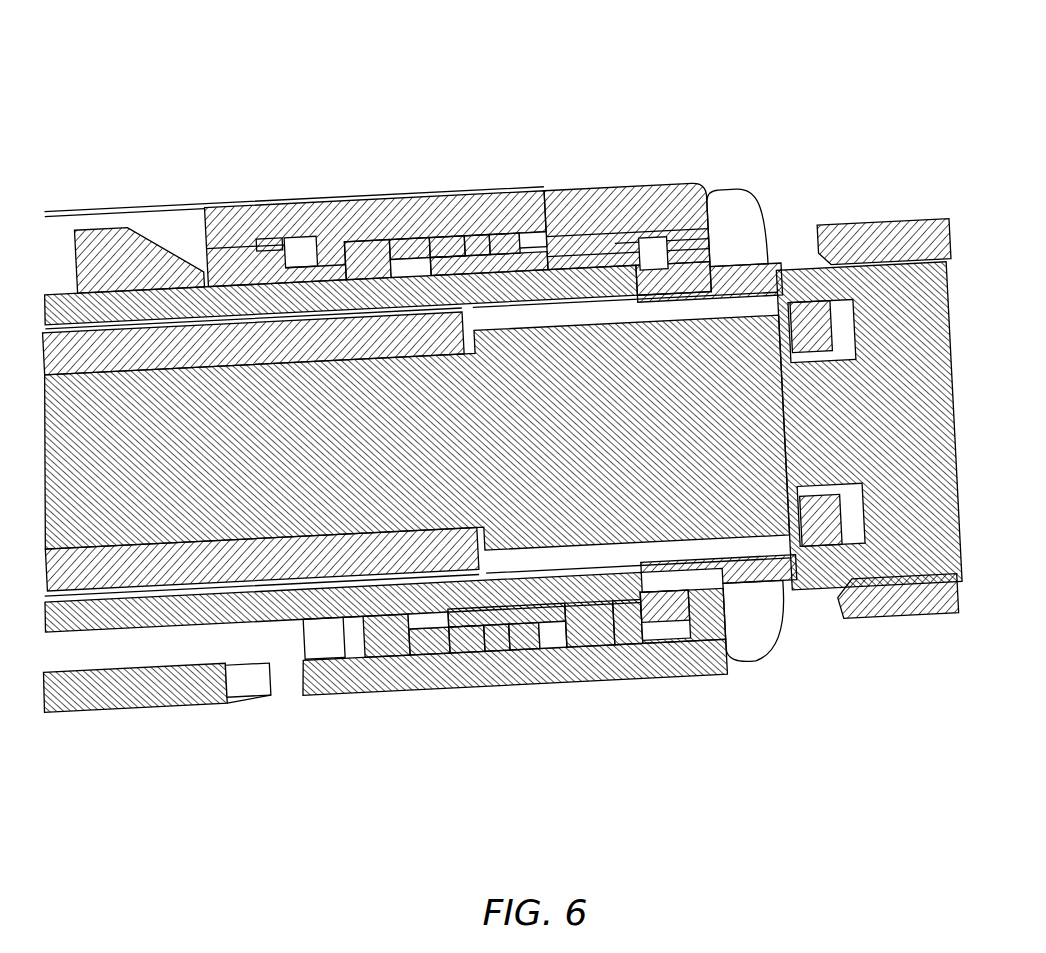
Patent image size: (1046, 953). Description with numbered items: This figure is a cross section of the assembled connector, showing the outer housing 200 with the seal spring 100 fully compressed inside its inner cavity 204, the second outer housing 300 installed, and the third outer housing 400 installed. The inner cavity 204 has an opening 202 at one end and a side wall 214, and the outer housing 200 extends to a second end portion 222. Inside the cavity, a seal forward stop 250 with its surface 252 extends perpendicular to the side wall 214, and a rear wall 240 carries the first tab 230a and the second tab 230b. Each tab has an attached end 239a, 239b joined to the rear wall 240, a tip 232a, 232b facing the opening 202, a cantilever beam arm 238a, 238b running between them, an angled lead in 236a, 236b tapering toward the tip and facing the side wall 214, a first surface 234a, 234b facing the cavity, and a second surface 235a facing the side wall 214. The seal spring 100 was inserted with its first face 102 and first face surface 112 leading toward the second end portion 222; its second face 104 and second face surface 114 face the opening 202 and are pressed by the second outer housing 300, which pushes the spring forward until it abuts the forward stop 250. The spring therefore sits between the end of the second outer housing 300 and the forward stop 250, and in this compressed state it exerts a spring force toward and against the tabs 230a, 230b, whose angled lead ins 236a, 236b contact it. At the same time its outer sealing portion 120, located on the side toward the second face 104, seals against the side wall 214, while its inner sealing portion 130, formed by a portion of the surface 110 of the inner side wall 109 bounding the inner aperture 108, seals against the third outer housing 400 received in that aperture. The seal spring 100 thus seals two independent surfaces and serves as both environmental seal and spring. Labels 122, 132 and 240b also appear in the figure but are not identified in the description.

The seal spring 100 is at (540, 235).
The first face 102 is at (560, 693).
The second face 104 is at (309, 423).
The inner aperture 108 is at (262, 245).
The inner side wall 109 is at (272, 245).
The surface 110 is at (507, 253).
The first face surface 112 is at (545, 640).
The second face surface 114 is at (300, 245).
The outer sealing portion 120 is at (378, 237).
The backup ring 122 is at (405, 235).
The inner sealing portion 130 is at (372, 245).
The retainer 132 is at (318, 240).
The outer housing 200 is at (728, 193).
The opening 202 is at (180, 703).
The inner cavity 204 is at (437, 247).
The side wall 214 is at (453, 245).
The second end portion 222 is at (955, 268).
The first tab 230a is at (658, 230).
The second tab 230b is at (602, 645).
The tip 232a is at (493, 247).
The tip 232b is at (472, 640).
The first surface 234a is at (612, 245).
The first surface 234b is at (565, 650).
The second surface 235a is at (637, 245).
The angled lead in 236a is at (515, 250).
The angled lead in 236b is at (508, 640).
The cantilever beam arm 238a is at (667, 258).
The cantilever beam arm 238b is at (645, 650).
The attached end 239a is at (700, 268).
The attached end 239b is at (692, 604).
The rear wall 240 is at (822, 228).
The lower outer ring 240b is at (692, 630).
The seal forward stop 250 is at (622, 138).
The surface 252 is at (598, 250).
The second outer housing 300 is at (240, 270).
The third outer housing 400 is at (140, 303).